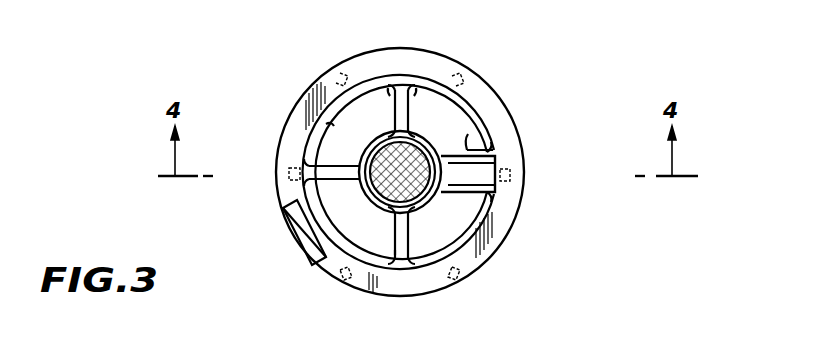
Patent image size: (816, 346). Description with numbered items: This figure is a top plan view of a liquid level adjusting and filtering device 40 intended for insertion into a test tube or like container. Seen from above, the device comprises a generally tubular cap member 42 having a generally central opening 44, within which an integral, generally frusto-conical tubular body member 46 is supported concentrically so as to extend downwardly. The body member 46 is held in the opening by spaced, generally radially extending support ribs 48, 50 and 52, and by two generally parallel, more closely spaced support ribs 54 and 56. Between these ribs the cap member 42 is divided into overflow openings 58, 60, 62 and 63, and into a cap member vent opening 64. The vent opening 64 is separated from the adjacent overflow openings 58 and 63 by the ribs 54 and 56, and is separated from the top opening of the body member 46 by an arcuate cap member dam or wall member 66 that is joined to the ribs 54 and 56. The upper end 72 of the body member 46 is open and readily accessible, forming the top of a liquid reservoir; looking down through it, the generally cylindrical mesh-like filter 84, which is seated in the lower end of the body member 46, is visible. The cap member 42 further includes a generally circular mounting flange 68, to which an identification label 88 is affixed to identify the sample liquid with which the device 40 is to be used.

The liquid level adjusting device 40 is at (507, 99).
The cap member 42 is at (458, 92).
The central opening 44 is at (330, 126).
The tubular body member 46 is at (432, 95).
The support rib 48 is at (413, 262).
The support rib 50 is at (305, 183).
The support rib 52 is at (386, 90).
The support rib 54 is at (470, 200).
The support rib 56 is at (482, 152).
The cap member overflow opening 58 is at (437, 262).
The cap member overflow opening 60 is at (397, 266).
The cap member overflow opening 62 is at (350, 114).
The cap member overflow opening 63 is at (420, 96).
The cap member vent opening 64 is at (460, 172).
The arcuate cap member dam 66 is at (500, 183).
The mounting flange 68 is at (521, 222).
The upper end 72 is at (366, 156).
The mesh-like filter 84 is at (420, 202).
The identification label 88 is at (302, 252).